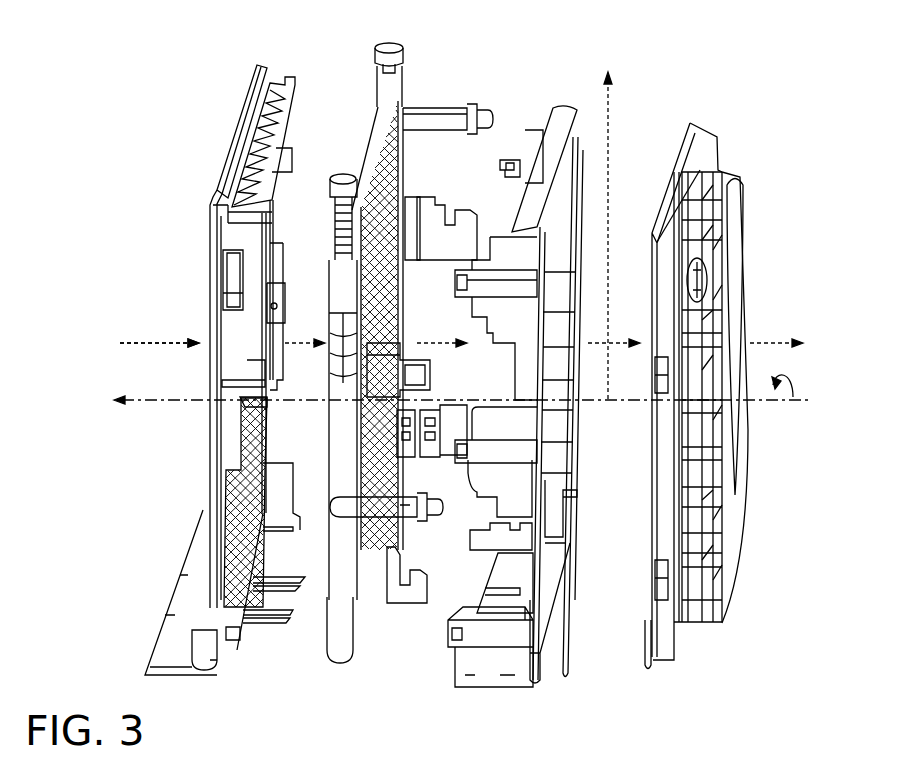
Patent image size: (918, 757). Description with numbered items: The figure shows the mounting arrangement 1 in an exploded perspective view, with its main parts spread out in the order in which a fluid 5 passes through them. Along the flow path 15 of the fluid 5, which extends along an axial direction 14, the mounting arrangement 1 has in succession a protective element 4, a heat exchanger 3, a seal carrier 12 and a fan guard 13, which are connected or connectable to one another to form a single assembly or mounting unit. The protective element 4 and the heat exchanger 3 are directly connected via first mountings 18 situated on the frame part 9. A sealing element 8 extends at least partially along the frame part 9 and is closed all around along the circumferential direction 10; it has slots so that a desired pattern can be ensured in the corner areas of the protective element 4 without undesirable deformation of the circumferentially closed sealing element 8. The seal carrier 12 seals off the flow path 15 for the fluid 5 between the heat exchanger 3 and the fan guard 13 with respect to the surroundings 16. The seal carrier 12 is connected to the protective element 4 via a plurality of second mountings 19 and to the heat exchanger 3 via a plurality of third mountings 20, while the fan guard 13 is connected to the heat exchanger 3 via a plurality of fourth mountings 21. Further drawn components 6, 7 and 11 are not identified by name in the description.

The mounting arrangement 1 is at (683, 104).
The heat exchanger 3 is at (378, 135).
The protective element 4 is at (283, 74).
The fluid 5 is at (135, 343).
The second heat exchanger 6 is at (247, 487).
The connector 7 is at (392, 469).
The sealing element 8 is at (225, 187).
The frame part 9 is at (258, 128).
The circumferential direction 10 is at (777, 420).
The vertical direction 11 is at (608, 167).
The seal carrier 12 is at (561, 108).
The fan guard 13 is at (701, 142).
The axial direction 14 is at (150, 400).
The flow path 15 is at (176, 343).
The surroundings 16 is at (721, 689).
The first mountings 18 is at (277, 550).
The second mountings 19 is at (229, 285).
The third mountings 20 is at (397, 357).
The fourth mountings 21 is at (464, 240).